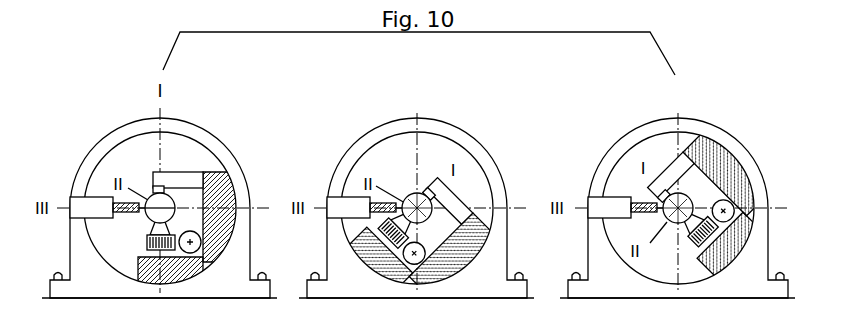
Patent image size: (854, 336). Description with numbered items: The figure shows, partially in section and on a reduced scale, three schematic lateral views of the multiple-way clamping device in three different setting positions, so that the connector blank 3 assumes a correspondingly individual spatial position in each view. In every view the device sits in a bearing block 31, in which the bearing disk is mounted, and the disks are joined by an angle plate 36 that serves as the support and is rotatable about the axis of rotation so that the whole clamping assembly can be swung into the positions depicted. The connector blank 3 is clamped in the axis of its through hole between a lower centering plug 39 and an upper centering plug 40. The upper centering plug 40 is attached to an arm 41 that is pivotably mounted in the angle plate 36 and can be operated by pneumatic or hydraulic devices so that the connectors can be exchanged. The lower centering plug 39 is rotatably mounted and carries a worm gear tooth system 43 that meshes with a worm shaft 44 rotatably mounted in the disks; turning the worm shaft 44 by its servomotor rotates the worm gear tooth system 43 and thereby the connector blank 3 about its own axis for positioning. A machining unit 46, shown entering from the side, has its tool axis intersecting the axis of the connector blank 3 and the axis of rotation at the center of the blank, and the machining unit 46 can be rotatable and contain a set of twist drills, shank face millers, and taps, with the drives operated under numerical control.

The connector blank 3 is at (170, 210).
The bearing block 31 is at (97, 280).
The angle plate 36 is at (222, 190).
The lower centering plug 39 is at (157, 232).
The upper centering plug 40 is at (158, 188).
The arm 41 is at (181, 178).
The worm gear tooth system 43 is at (181, 259).
The worm shaft 44 is at (199, 253).
The machining unit 46 is at (90, 196).